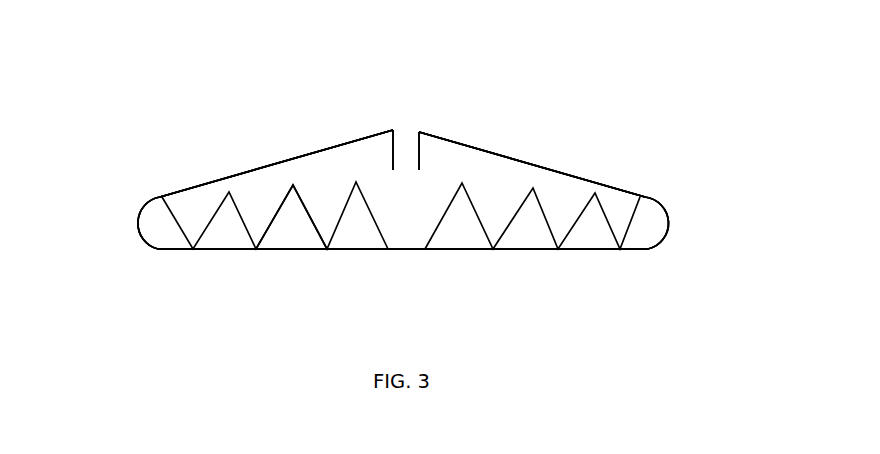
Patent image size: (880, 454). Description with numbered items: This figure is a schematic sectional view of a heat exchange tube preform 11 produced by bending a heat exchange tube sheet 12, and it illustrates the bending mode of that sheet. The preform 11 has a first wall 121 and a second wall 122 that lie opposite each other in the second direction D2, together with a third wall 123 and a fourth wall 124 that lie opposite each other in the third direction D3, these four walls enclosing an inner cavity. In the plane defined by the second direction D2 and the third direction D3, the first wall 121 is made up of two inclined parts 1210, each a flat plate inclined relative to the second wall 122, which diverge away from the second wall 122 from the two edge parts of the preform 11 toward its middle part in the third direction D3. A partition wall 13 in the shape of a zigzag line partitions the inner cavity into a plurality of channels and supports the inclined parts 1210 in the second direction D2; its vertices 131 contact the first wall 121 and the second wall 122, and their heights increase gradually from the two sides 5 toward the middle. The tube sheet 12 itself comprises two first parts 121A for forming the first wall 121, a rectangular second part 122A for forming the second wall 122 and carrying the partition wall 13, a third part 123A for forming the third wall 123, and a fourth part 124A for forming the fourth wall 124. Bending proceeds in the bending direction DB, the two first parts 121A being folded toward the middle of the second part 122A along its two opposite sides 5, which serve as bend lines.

The heat exchange tube preform 11 is at (673, 62).
The heat exchange tube sheet 12 is at (542, 252).
The first wall 121 is at (443, 127).
The first part 121A is at (190, 188).
The inclined part 1210 is at (230, 177).
The partition wall 13 is at (608, 208).
The vertices 131 is at (293, 185).
The second wall 122 is at (300, 250).
The second part 122A is at (410, 250).
The third wall 123 is at (138, 240).
The third part 123A is at (134, 223).
The fourth wall 124 is at (667, 238).
The fourth part 124A is at (675, 222).
The sides 5 is at (157, 250).
The bending direction DB is at (350, 162).
The second direction D2 is at (52, 163).
The third direction D3 is at (485, 32).